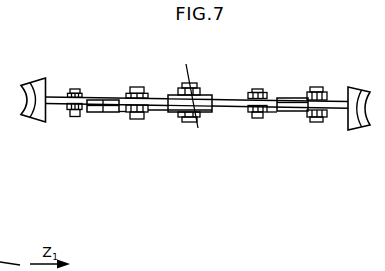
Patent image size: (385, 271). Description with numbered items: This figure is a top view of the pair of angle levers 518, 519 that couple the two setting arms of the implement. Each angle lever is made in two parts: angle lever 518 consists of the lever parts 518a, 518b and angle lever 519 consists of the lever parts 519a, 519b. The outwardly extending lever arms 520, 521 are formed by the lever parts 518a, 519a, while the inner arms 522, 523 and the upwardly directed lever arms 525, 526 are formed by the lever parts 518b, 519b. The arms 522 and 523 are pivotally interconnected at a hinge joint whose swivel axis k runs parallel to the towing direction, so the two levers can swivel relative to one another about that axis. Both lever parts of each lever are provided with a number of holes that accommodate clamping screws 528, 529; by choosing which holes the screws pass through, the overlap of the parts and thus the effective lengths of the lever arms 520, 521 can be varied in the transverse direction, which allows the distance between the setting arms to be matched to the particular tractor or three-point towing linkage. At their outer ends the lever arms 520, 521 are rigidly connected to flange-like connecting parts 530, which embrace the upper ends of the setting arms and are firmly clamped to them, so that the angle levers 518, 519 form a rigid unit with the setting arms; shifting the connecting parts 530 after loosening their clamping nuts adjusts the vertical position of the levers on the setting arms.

The flange-like connecting part 530 is at (33, 80).
The outwardly extending lever arm 520 is at (61, 96).
The outwardly extending lever arm 521 is at (340, 107).
The angle lever 518 is at (120, 112).
The lever part 518a is at (78, 98).
The lever part 518b is at (137, 119).
The angle lever 519 is at (274, 123).
The lever part 519a is at (318, 122).
The lever part 519b is at (243, 98).
The clamping screw 528 is at (77, 117).
The clamping screw 529 is at (135, 87).
The upwardly directed lever arm 525 is at (103, 106).
The upwardly directed lever arm 526 is at (285, 104).
The arm 522 is at (178, 112).
The arm 523 is at (215, 100).
The swivel axis k is at (187, 89).